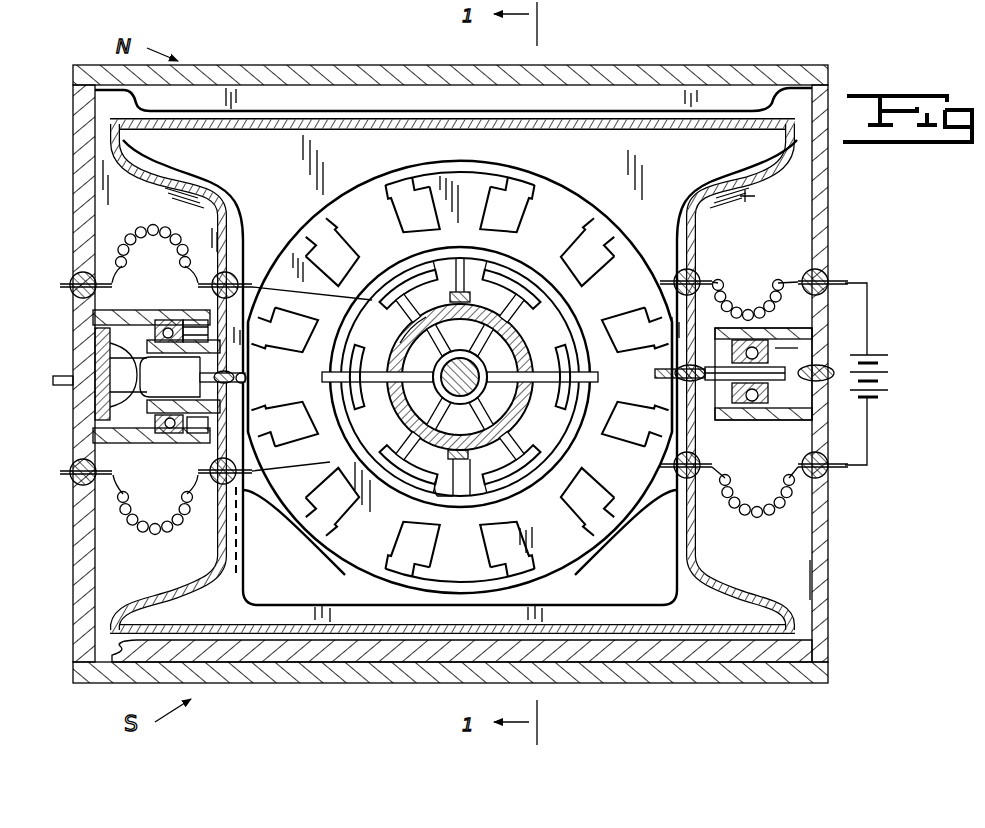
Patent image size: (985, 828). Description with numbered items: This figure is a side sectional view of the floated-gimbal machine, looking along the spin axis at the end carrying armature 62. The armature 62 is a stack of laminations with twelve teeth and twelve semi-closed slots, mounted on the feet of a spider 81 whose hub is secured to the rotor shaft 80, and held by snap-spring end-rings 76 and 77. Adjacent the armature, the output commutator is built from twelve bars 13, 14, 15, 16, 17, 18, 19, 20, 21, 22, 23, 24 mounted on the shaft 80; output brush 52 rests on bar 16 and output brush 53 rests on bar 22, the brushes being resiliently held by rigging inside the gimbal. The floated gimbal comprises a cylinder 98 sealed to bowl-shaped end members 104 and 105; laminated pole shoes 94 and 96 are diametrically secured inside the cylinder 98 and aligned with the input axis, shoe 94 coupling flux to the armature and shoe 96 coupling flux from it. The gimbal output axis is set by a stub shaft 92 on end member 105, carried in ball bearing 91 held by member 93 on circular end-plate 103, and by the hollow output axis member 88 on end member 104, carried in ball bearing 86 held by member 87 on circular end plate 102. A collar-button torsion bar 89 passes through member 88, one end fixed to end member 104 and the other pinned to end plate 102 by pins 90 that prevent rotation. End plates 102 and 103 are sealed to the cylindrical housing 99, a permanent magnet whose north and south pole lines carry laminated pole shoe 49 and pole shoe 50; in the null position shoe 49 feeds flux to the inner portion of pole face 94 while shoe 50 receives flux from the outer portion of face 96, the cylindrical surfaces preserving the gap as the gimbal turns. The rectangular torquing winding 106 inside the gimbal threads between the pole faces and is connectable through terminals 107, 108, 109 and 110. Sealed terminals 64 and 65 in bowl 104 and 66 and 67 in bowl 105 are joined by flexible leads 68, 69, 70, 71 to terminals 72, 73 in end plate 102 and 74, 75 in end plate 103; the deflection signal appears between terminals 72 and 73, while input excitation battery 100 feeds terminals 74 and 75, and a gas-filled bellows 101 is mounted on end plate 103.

The output commutator bar 13 is at (444, 377).
The output commutator bar 14 is at (410, 304).
The output commutator bar 15 is at (413, 370).
The output commutator bar 16 is at (460, 340).
The output commutator bar 17 is at (531, 269).
The output commutator bar 18 is at (532, 300).
The output commutator bar 19 is at (542, 390).
The output commutator bar 20 is at (519, 457).
The output commutator bar 21 is at (525, 496).
The output commutator bar 22 is at (460, 414).
The output commutator bar 23 is at (428, 514).
The output commutator bar 24 is at (377, 390).
The laminated pole shoe 49 is at (652, 113).
The laminated pole shoe 50 is at (602, 684).
The output brush 52 is at (474, 266).
The output brush 53 is at (460, 490).
The armature 62 is at (556, 531).
The terminal 64 is at (206, 266).
The terminal 65 is at (207, 496).
The terminal 66 is at (716, 270).
The terminal 67 is at (703, 502).
The flexible lead 68 is at (153, 226).
The flexible lead 69 is at (147, 530).
The flexible lead 70 is at (755, 300).
The flexible lead 71 is at (770, 515).
The terminal 72 is at (62, 281).
The terminal 73 is at (62, 494).
The terminal 74 is at (842, 266).
The terminal 75 is at (838, 487).
The snap-spring end-ring 76 is at (578, 432).
The snap-spring end-ring 77 is at (541, 394).
The rotor shaft 80 is at (460, 377).
The spider 81 is at (403, 375).
The ball bearing 86 is at (205, 425).
The bearing support member 87 is at (185, 443).
The output axis member 88 is at (153, 433).
The torsion bar 89 is at (117, 380).
The pins 90 is at (128, 340).
The ball bearing 91 is at (672, 373).
The stub shaft 92 is at (730, 350).
The bearing support member 93 is at (770, 413).
The laminated pole shoe 94 is at (560, 168).
The laminated pole shoe 96 is at (405, 560).
The cylinder 98 is at (288, 132).
The cylindrical housing 99 is at (722, 66).
The input excitation battery 100 is at (880, 353).
The bellows 101 is at (737, 198).
The circular end plate 102 is at (95, 198).
The circular end-plate 103 is at (829, 588).
The bowl-shaped end member 104 is at (245, 228).
The bowl-shaped end member 105 is at (674, 240).
The torquing winding 106 is at (258, 447).
The terminal 107 is at (303, 377).
The terminal 108 is at (683, 380).
The terminal 109 is at (78, 378).
The terminal 110 is at (832, 382).